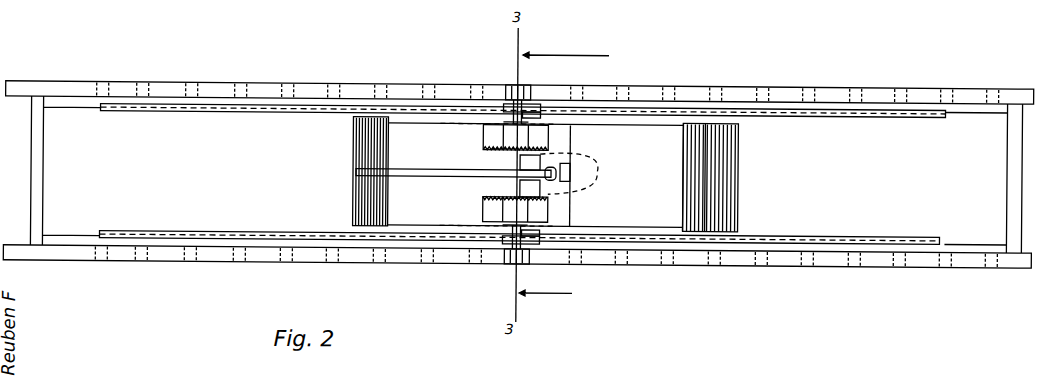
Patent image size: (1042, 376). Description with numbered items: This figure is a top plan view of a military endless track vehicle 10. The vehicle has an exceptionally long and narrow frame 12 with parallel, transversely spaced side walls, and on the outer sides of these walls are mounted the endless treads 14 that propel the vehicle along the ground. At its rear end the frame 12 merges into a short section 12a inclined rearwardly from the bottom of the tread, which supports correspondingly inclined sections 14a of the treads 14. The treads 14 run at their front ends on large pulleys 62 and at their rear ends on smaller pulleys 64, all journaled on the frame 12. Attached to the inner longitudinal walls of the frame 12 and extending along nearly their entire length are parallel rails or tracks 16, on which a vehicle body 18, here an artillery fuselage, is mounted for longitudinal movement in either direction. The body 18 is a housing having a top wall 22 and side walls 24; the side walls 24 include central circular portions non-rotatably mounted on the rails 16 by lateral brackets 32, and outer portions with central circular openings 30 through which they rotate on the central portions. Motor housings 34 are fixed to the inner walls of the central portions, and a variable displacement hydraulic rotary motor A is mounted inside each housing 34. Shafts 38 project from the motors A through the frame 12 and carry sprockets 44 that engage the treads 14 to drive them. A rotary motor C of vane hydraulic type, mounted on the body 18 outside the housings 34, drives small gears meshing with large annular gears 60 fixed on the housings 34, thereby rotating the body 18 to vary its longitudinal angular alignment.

The military endless track vehicle 10 is at (518, 184).
The frame 12 is at (162, 95).
The short section 12a is at (950, 104).
The endless treads 14 is at (280, 84).
The inclined sections of the treads 14a is at (884, 93).
The rails or tracks 16 is at (224, 112).
The vehicle body 18 is at (382, 120).
The top wall 22 is at (408, 212).
The side walls 24 is at (611, 120).
The central circular openings 30 is at (478, 118).
The lateral brackets 32 is at (538, 113).
The motor housings 34 is at (548, 142).
The shafts 38 is at (525, 108).
The sprockets 44 is at (506, 87).
The large annular gears 60 is at (503, 152).
The large pulleys 62 is at (47, 84).
The smaller pulleys 64 is at (1006, 88).
The variable displacement hydraulic rotary motor A is at (492, 139).
The rotary motor of a vane hydraulic type C is at (572, 171).